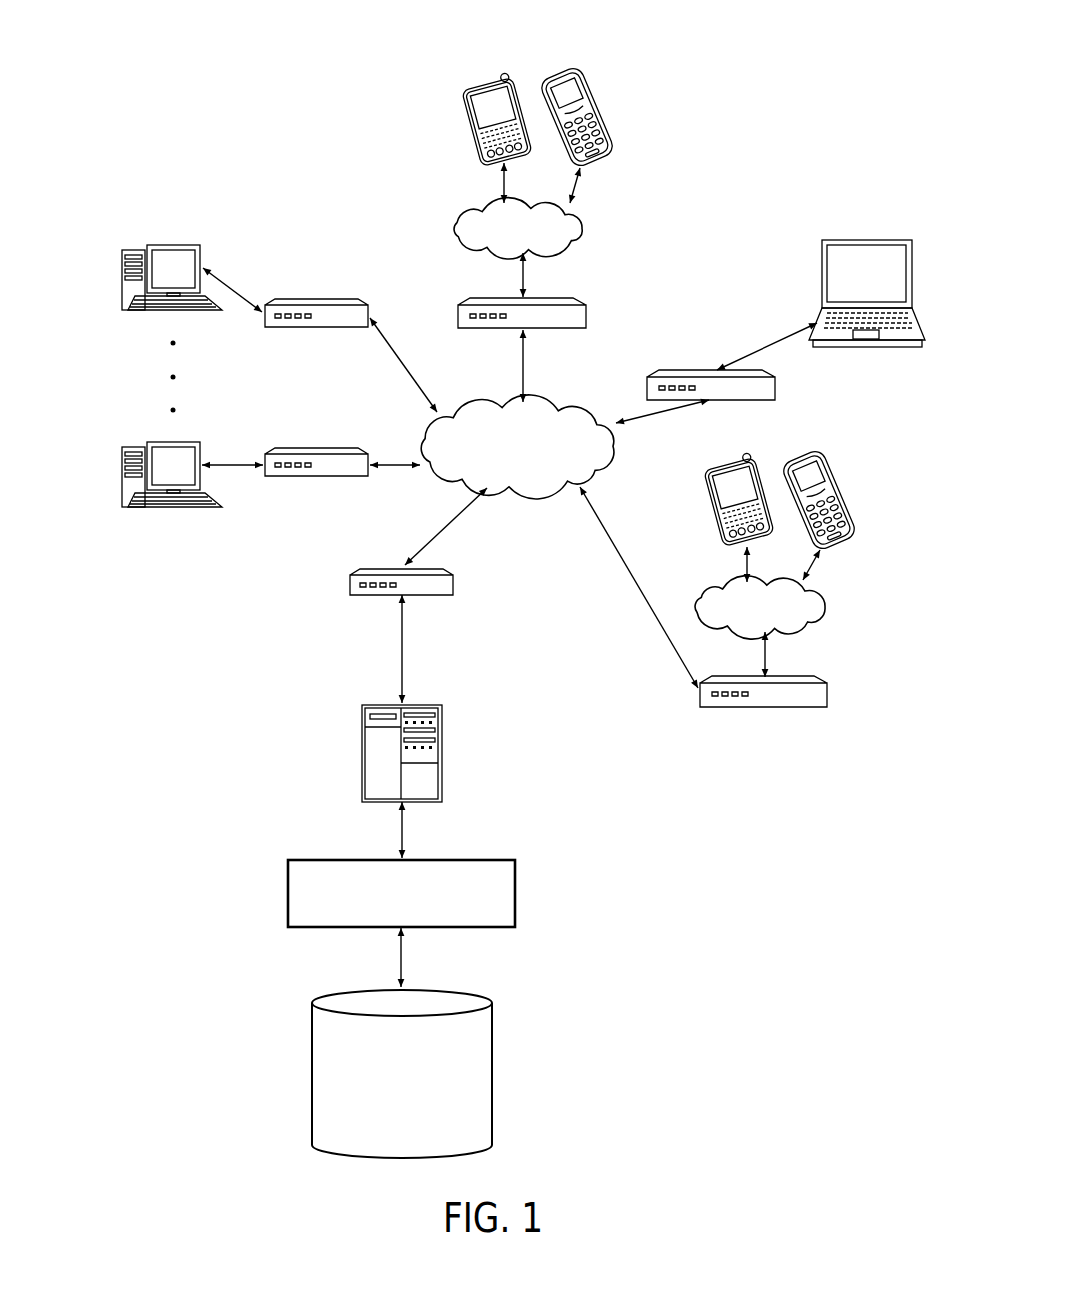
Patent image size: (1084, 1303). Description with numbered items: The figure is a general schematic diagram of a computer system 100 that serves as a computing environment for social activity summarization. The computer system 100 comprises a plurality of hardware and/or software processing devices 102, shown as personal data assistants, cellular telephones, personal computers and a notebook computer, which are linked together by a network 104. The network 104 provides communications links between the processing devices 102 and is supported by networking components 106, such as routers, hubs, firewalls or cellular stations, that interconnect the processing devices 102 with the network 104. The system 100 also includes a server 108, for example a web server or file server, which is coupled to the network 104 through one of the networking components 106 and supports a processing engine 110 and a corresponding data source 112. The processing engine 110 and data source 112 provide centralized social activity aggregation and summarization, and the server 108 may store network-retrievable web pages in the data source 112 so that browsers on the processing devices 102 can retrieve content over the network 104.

The computer system 100 is at (763, 124).
The processing devices 102 is at (486, 84).
The network 104 is at (588, 222).
The networking components 106 is at (588, 318).
The server 108 is at (442, 752).
The processing engine 110 is at (517, 895).
The data source 112 is at (494, 1085).